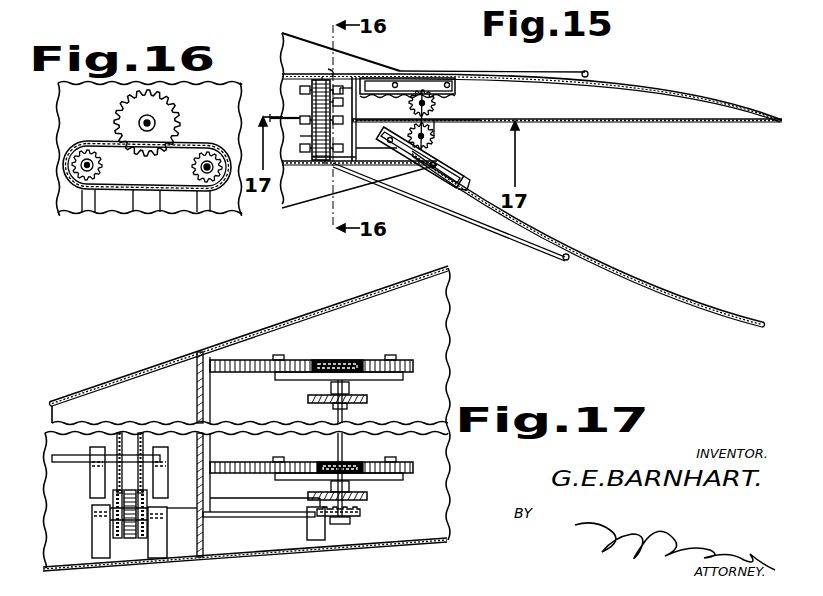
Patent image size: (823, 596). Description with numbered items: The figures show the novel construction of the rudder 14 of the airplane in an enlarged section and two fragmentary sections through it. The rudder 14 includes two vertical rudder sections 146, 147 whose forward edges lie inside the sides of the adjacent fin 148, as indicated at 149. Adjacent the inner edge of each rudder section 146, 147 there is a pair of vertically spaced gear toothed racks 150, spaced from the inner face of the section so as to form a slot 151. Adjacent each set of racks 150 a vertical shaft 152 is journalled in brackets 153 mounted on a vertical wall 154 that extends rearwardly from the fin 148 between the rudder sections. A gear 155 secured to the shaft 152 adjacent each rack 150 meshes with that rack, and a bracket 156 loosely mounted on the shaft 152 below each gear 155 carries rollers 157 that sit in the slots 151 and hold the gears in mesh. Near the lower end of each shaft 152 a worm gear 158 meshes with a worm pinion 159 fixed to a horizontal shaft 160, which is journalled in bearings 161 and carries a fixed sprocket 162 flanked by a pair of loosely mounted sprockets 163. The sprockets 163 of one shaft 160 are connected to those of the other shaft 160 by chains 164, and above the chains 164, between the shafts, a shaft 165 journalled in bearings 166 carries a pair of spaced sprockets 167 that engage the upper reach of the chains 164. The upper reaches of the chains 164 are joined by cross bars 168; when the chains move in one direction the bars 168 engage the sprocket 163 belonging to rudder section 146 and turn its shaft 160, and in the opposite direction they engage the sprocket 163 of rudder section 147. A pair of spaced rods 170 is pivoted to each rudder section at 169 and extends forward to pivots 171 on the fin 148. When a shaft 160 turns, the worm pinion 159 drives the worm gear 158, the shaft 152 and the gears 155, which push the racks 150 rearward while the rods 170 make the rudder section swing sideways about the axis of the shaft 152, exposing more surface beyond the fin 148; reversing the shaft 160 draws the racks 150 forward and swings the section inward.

In FIG. 15, the rudder 14 is at (532, 118).
In FIG. 17, the rudder 14 is at (262, 418).
In FIG. 15, the rudder section 146 is at (655, 85).
In FIG. 17, the rudder section 146 is at (448, 285).
In FIG. 15, the rudder section 147 is at (655, 297).
In FIG. 15, the fin 148 is at (302, 45).
In FIG. 17, the fin 148 is at (114, 378).
In FIG. 15, the forward edge location 149 is at (372, 73).
In FIG. 15, the gear toothed rack 150 is at (456, 92).
In FIG. 17, the gear toothed rack 150 is at (243, 372).
In FIG. 15, the slot 151 is at (393, 78).
In FIG. 15, the vertical shaft 152 is at (409, 105).
In FIG. 17, the vertical shaft 152 is at (279, 355).
In FIG. 15, the bracket 153 is at (434, 137).
In FIG. 17, the bracket 153 is at (368, 399).
In FIG. 15, the vertical wall 154 is at (558, 119).
In FIG. 15, the gear 155 is at (434, 107).
In FIG. 17, the gear 155 is at (340, 358).
In FIG. 15, the bracket 156 is at (436, 104).
In FIG. 17, the bracket 156 is at (399, 378).
In FIG. 15, the roller 157 is at (403, 79).
In FIG. 17, the roller 157 is at (390, 355).
In FIG. 17, the worm gear 158 is at (362, 512).
In FIG. 15, the worm pinion 159 is at (428, 78).
In FIG. 17, the worm pinion 159 is at (347, 519).
In FIG. 15, the shaft 160 is at (355, 92).
In FIG. 17, the shaft 160 is at (240, 517).
In FIG. 16, the bearing 161 is at (80, 200).
In FIG. 17, the bearing 161 is at (306, 530).
In FIG. 15, the sprocket 162 is at (314, 78).
In FIG. 16, the sprocket 162 is at (65, 165).
In FIG. 17, the sprocket 162 is at (130, 542).
In FIG. 15, the sprocket 163 is at (333, 77).
In FIG. 16, the sprocket 163 is at (88, 148).
In FIG. 17, the sprocket 163 is at (141, 540).
In FIG. 15, the chain 164 is at (312, 136).
In FIG. 16, the chain 164 is at (117, 193).
In FIG. 17, the chain 164 is at (113, 524).
In FIG. 15, the shaft 165 is at (270, 117).
In FIG. 16, the shaft 165 is at (145, 120).
In FIG. 17, the shaft 165 is at (80, 462).
In FIG. 16, the bearing 166 is at (147, 207).
In FIG. 17, the bearing 166 is at (90, 488).
In FIG. 16, the sprocket 167 is at (171, 107).
In FIG. 17, the sprocket 167 is at (117, 437).
In FIG. 15, the cross bar 168 is at (312, 104).
In FIG. 15, the pivot 169 is at (586, 74).
In FIG. 15, the rod 170 is at (556, 71).
In FIG. 15, the pivot 171 is at (327, 75).